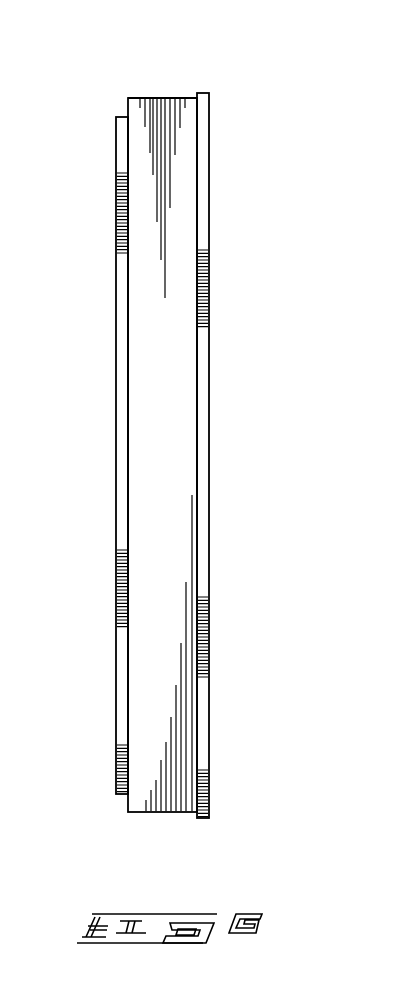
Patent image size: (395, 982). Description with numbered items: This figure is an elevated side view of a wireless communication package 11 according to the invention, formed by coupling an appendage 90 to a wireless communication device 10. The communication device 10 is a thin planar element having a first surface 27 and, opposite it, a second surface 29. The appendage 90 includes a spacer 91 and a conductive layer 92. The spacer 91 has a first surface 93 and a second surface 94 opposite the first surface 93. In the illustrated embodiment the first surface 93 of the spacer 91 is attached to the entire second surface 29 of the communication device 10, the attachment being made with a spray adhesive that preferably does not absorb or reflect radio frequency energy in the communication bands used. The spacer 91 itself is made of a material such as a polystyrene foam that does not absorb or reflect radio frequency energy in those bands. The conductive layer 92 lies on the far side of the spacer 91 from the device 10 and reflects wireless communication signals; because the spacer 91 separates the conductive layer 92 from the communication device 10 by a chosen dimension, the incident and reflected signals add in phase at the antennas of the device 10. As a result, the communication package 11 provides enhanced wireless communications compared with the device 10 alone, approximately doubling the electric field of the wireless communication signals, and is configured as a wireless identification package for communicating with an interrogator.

The wireless communication device 10 is at (116, 160).
The wireless communication package 11 is at (247, 68).
The first surface 27 is at (116, 605).
The second surface 29 is at (135, 293).
The appendage 90 is at (128, 98).
The spacer 91 is at (163, 97).
The conductive layer 92 is at (210, 142).
The first surface 93 is at (128, 468).
The second surface 94 is at (197, 236).